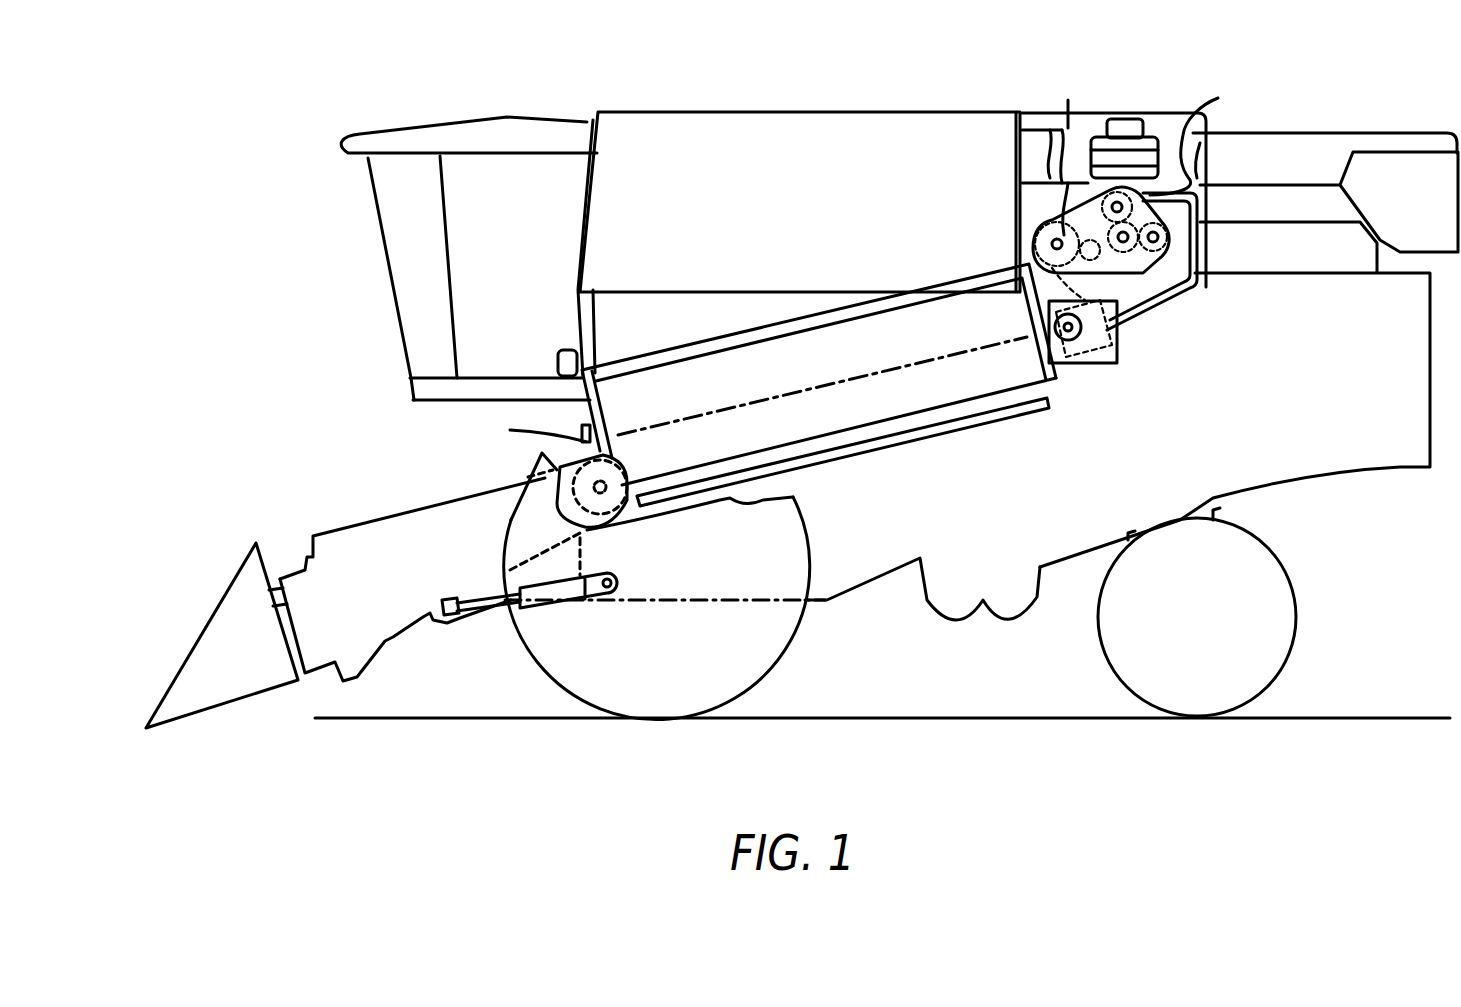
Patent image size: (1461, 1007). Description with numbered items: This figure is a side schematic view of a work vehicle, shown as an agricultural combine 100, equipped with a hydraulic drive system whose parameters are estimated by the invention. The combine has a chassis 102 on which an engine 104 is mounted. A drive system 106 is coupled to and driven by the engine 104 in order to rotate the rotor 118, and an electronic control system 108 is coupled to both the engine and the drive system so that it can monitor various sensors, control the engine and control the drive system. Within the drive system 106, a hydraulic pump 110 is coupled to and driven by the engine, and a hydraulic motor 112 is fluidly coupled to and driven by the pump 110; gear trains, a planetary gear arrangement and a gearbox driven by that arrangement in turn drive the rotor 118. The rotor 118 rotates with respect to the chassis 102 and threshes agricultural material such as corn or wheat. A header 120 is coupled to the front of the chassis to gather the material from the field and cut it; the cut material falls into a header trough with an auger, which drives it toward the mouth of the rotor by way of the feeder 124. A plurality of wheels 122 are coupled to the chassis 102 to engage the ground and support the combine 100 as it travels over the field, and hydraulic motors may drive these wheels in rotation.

The agricultural combine 100 is at (882, 50).
The chassis 102 is at (903, 522).
The engine 104 is at (1120, 120).
The drive system 106 is at (1066, 125).
The electronic control system 108 is at (552, 358).
The hydraulic pump 110 is at (1147, 206).
The hydraulic motor 112 is at (1062, 363).
The rotor 118 is at (780, 347).
The header 120 is at (240, 603).
The wheels 122 is at (550, 637).
The feeder 124 is at (448, 579).